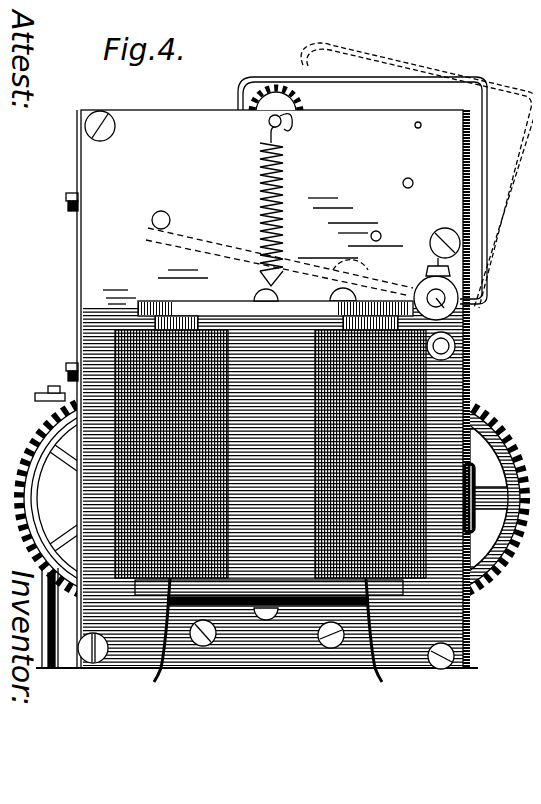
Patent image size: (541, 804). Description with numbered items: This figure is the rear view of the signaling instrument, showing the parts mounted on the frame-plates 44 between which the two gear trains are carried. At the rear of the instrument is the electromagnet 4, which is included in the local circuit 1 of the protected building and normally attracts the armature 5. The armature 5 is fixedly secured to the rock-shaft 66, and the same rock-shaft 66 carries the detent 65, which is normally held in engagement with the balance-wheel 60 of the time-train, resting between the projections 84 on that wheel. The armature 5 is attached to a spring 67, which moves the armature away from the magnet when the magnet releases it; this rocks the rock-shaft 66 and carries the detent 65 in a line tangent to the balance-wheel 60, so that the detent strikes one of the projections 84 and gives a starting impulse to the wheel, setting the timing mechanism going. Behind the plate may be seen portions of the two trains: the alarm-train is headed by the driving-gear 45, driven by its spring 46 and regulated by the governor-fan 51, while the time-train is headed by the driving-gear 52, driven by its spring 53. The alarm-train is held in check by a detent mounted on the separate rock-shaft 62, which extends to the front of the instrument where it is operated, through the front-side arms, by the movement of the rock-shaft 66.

The local circuit 1 is at (275, 637).
The electromagnet 4 is at (294, 414).
The armature 5 is at (170, 298).
The frame-plates 44 is at (257, 389).
The driving-gear 45 is at (487, 416).
The spring 46 is at (460, 480).
The governor-fan 51 is at (436, 77).
The driving-gear 52 is at (124, 498).
The spring 53 is at (60, 462).
The balance-wheel 60 is at (283, 113).
The rock-shaft 62 is at (447, 341).
The detent 65 is at (239, 93).
The rock-shaft 66 is at (449, 301).
The spring 67 is at (276, 200).
The projections 84 is at (269, 84).